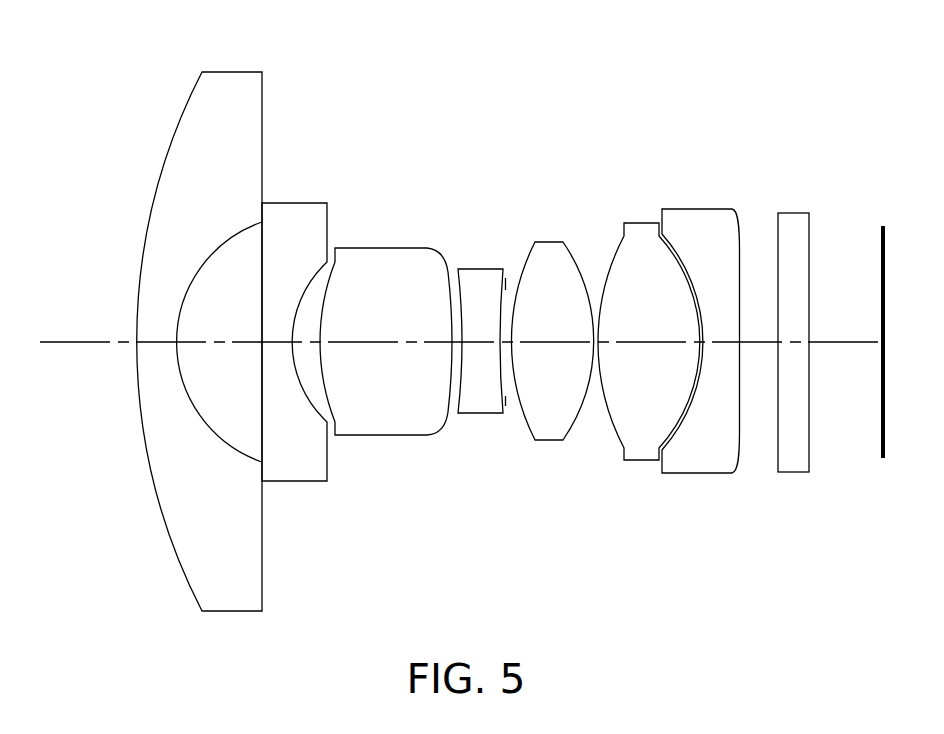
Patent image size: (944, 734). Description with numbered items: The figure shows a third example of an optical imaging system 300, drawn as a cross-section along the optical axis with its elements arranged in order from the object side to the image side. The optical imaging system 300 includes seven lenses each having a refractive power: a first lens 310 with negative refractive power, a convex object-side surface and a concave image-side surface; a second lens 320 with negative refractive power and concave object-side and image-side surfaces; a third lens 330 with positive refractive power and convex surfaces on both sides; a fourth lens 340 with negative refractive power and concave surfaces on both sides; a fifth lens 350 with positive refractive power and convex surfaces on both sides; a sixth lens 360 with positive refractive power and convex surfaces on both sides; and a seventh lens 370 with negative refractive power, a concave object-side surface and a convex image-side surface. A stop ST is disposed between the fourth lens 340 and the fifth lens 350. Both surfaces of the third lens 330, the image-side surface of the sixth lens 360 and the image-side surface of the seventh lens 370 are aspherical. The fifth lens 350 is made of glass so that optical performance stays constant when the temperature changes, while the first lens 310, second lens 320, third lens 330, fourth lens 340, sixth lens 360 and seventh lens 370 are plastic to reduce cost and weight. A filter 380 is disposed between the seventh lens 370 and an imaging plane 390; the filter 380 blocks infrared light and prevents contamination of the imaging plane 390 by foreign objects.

The optical imaging system 300 is at (527, 109).
The first lens 310 is at (229, 72).
The second lens 320 is at (293, 203).
The third lens 330 is at (380, 248).
The fourth lens 340 is at (481, 269).
The stop ST is at (505, 406).
The fifth lens 350 is at (548, 242).
The sixth lens 360 is at (642, 223).
The seventh lens 370 is at (698, 209).
The filter 380 is at (793, 213).
The imaging plane 390 is at (882, 440).